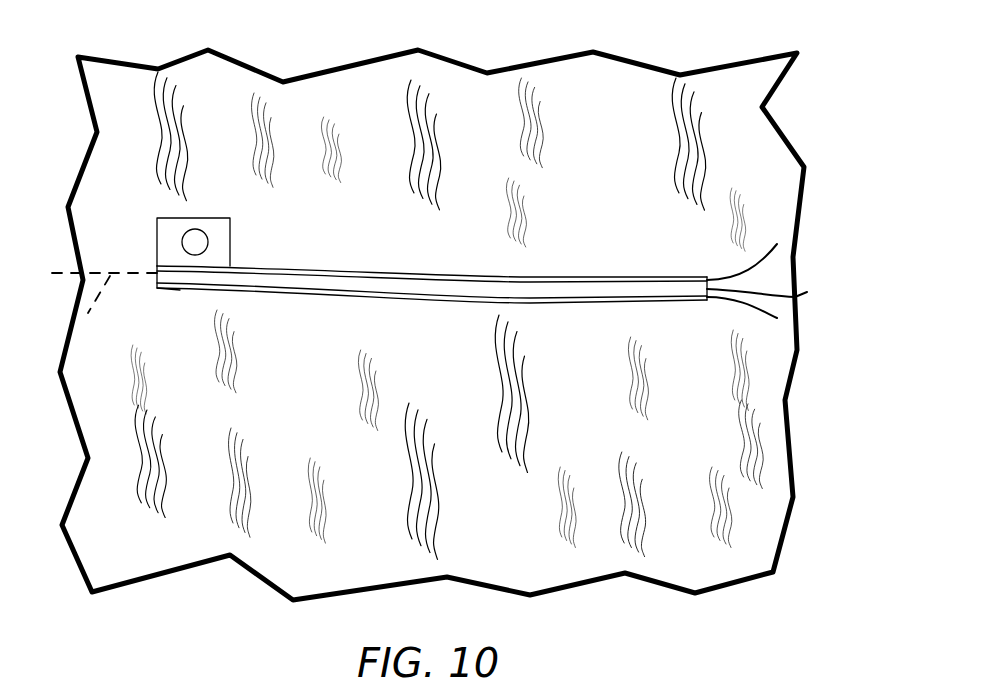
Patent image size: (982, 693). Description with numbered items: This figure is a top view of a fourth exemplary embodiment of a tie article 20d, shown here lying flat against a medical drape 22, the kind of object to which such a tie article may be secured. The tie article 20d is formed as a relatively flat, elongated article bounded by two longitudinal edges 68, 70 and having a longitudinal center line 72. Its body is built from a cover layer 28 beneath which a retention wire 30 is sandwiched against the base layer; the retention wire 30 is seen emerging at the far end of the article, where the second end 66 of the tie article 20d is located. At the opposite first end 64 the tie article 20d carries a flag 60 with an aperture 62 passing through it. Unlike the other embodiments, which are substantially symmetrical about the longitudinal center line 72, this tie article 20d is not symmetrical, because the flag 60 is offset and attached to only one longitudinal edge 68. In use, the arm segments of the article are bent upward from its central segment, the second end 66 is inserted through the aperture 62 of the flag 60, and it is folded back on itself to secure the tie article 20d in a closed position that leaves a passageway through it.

The tie article 20d is at (434, 252).
The medical drape 22 is at (479, 145).
The cover layer 28 is at (408, 286).
The retention wire 30 is at (757, 270).
The flag 60 is at (160, 235).
The aperture 62 is at (197, 238).
The first end 64 is at (155, 286).
The second end 66 is at (771, 286).
The longitudinal edge 68 is at (285, 268).
The longitudinal edge 70 is at (265, 295).
The longitudinal center line 72 is at (72, 323).